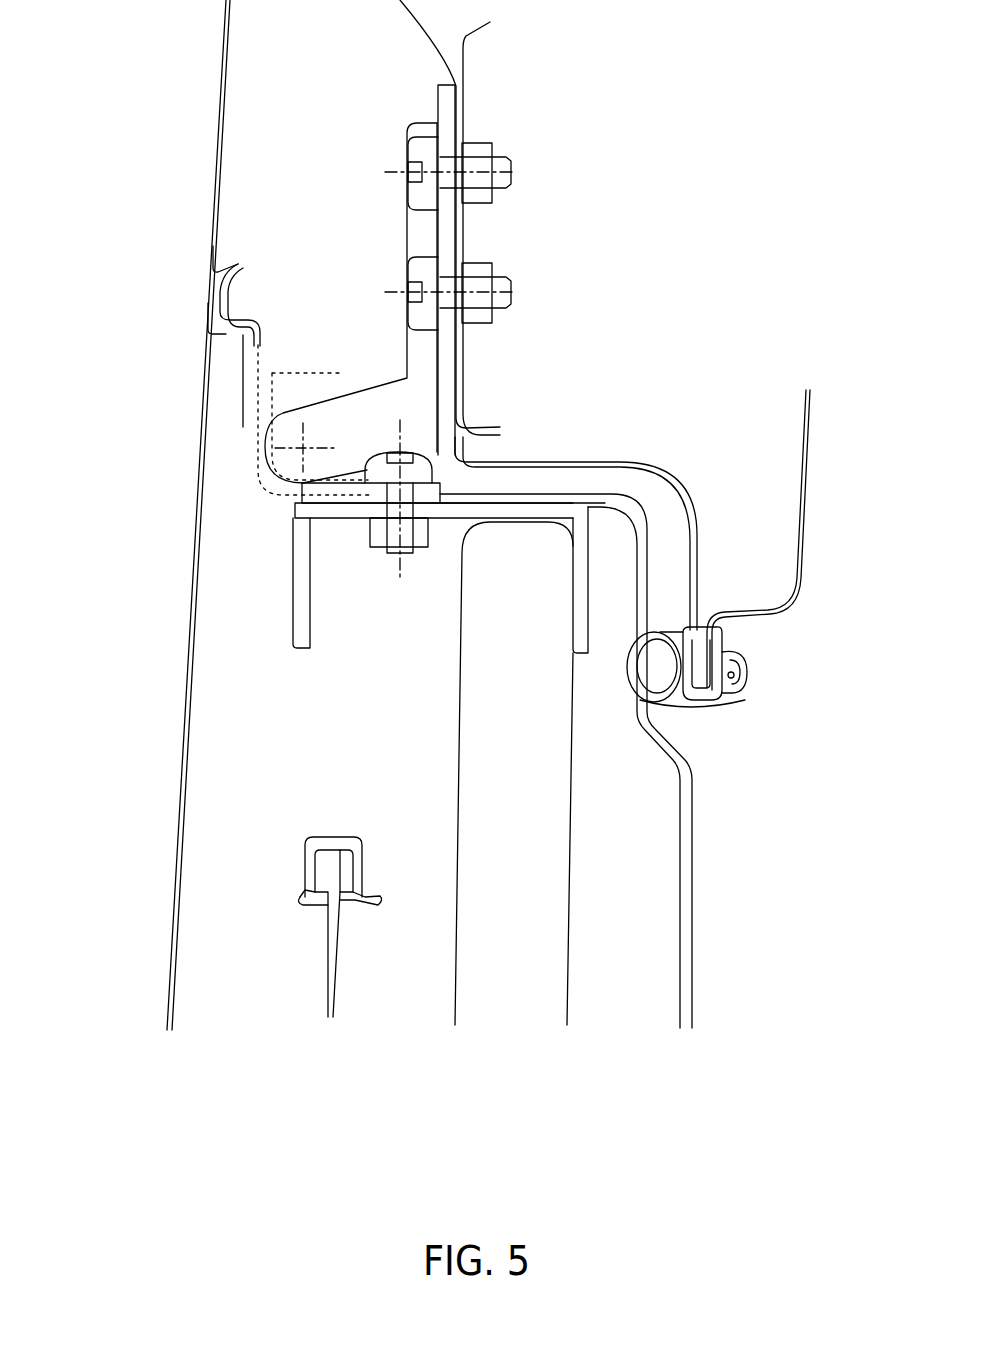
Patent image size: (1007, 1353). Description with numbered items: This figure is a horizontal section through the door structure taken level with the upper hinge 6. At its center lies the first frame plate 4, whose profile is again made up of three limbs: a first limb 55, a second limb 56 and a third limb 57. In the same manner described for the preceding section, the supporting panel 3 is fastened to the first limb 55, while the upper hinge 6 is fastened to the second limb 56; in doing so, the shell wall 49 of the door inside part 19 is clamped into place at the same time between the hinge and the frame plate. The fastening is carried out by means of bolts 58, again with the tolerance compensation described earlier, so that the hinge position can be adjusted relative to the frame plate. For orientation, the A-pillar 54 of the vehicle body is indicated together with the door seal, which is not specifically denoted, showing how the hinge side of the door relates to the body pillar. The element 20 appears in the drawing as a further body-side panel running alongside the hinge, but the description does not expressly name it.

The supporting panel 3 is at (480, 816).
The first frame plate 4 is at (580, 515).
The upper hinge 6 is at (412, 380).
The door inside part 19 is at (643, 599).
The side panel 20 is at (202, 473).
The shell wall 49 is at (553, 503).
The A-pillar 54 is at (576, 434).
The first limb 55 is at (578, 595).
The second limb 56 is at (469, 513).
The third limb 57 is at (299, 615).
The bolts 58 is at (400, 515).